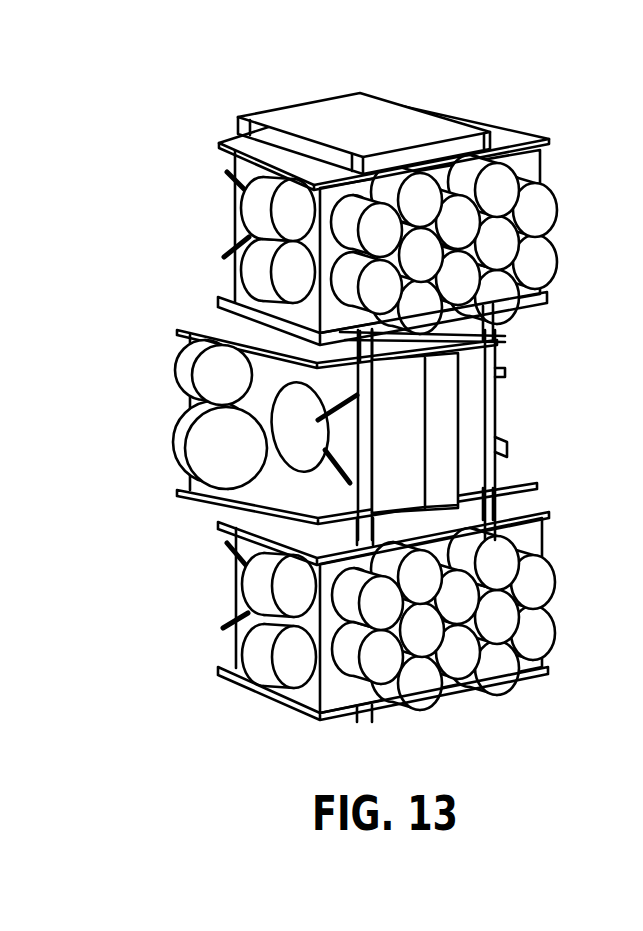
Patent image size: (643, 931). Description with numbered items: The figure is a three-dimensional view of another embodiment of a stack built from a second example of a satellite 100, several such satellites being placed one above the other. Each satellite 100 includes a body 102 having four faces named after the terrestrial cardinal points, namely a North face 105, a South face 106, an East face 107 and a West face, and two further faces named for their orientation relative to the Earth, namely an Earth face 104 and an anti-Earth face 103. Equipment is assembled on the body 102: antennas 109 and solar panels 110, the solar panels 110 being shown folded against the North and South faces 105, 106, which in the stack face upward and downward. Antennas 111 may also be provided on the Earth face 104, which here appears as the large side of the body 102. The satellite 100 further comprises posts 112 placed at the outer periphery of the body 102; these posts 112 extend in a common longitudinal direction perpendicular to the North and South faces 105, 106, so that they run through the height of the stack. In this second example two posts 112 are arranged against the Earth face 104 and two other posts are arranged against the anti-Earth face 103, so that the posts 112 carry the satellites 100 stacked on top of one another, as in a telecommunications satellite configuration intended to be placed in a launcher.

The satellite 100 is at (205, 136).
The body 102 is at (232, 201).
The anti-Earth face 103 is at (395, 450).
The Earth face 104 is at (532, 150).
The North face 105 is at (495, 135).
The South face 106 is at (342, 694).
The East face 107 is at (238, 172).
The antennas 109 is at (287, 295).
The solar panels 110 is at (318, 118).
The antennas 111 is at (556, 206).
The posts 112 is at (237, 498).